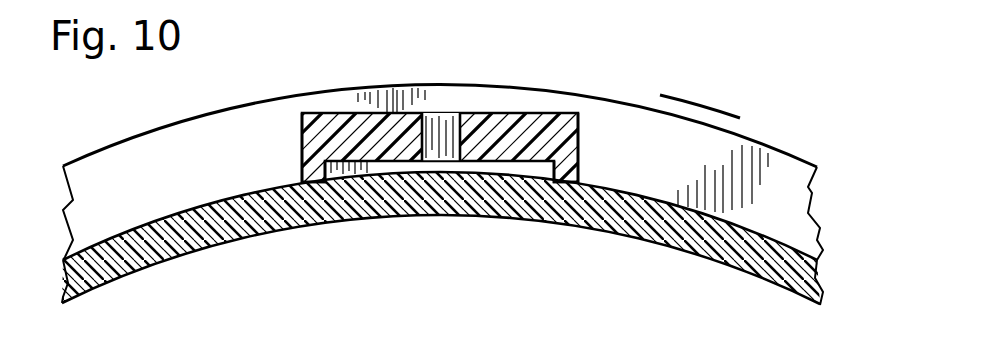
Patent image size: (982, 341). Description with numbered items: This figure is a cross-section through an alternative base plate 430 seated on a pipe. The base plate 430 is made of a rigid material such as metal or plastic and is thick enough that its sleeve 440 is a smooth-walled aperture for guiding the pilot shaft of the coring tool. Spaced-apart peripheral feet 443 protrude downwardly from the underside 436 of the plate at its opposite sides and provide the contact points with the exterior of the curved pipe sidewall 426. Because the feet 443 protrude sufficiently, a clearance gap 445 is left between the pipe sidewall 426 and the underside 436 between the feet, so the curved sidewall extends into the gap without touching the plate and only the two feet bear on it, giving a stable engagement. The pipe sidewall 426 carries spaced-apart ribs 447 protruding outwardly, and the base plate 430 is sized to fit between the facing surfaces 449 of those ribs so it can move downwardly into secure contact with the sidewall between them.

The pipe sidewall 426 is at (175, 217).
The base plate 430 is at (596, 126).
The underside 436 is at (527, 163).
The sleeve 440 is at (457, 137).
The peripheral feet 443 is at (298, 173).
The clearance gap 445 is at (328, 164).
The ribs 447 is at (700, 102).
The facing surfaces 449 is at (230, 171).